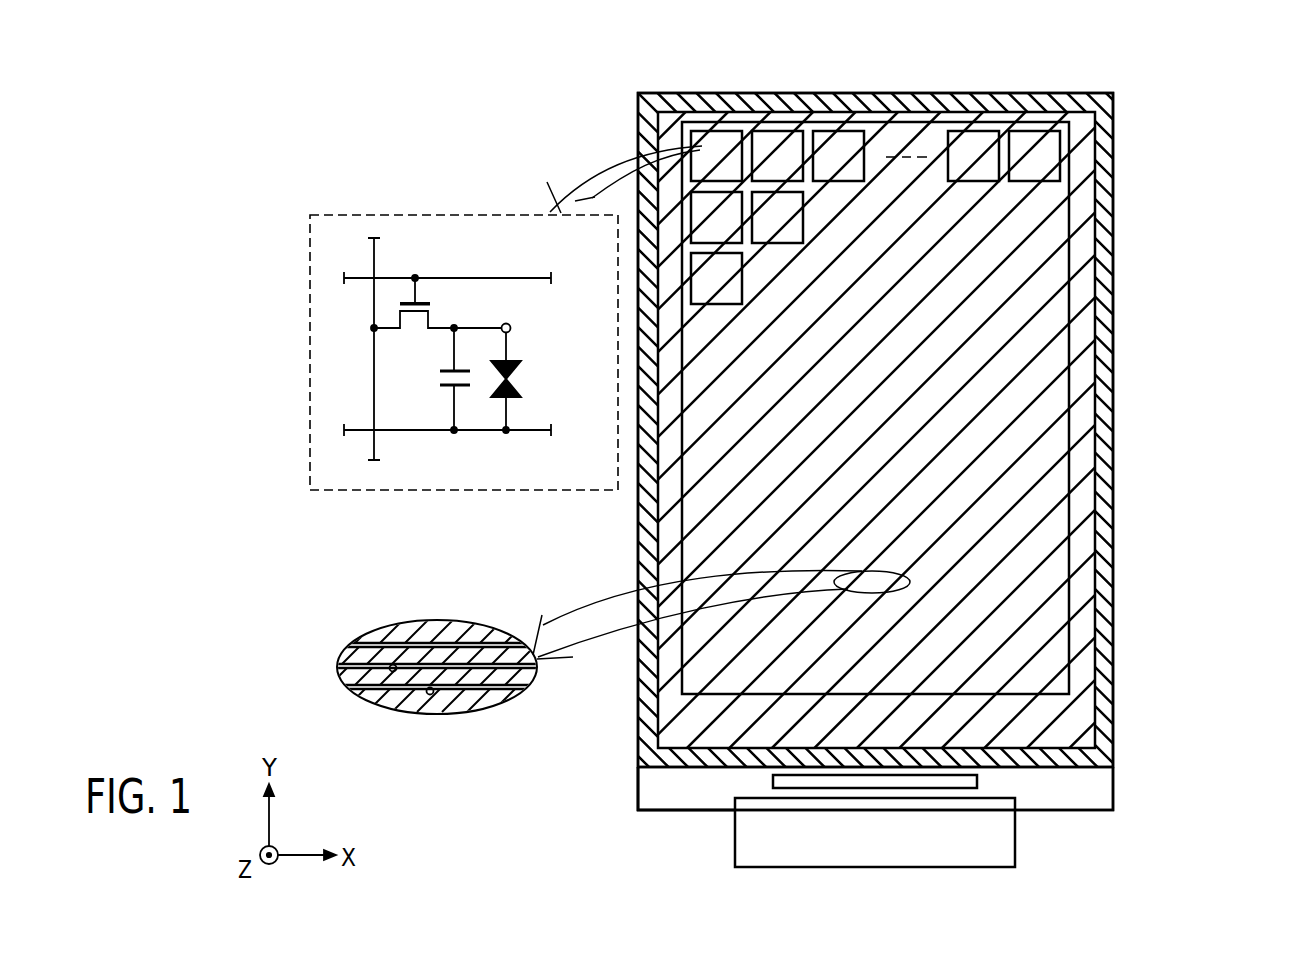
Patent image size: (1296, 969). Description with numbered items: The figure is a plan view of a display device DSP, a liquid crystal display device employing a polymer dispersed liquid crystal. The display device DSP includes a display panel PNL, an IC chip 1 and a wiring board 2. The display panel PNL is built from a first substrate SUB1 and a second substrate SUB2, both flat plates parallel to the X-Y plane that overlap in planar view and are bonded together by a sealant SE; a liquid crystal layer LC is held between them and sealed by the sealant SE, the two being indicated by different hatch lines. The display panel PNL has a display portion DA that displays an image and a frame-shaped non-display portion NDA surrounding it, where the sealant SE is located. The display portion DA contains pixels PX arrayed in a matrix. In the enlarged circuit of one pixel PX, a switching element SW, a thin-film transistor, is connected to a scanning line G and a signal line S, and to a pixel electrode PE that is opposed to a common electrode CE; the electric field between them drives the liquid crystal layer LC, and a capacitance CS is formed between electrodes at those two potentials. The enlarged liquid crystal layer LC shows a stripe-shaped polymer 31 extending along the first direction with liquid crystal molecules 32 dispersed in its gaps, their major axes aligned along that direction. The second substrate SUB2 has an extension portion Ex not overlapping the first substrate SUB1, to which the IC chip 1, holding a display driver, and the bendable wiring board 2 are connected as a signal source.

The display device DSP is at (1200, 139).
The display panel PNL is at (1118, 88).
The display portion DA is at (1080, 470).
The non-display portion NDA is at (1114, 557).
The sealant SE is at (1102, 633).
The liquid crystal layer LC is at (1082, 718).
The first substrate SUB1 is at (1102, 745).
The second substrate SUB2 is at (1102, 790).
The extension portion Ex is at (650, 788).
The pixel PX is at (832, 130).
The IC chip 1 is at (977, 782).
The wiring board 2 is at (1015, 855).
The polymer 31 is at (348, 680).
The liquid crystal molecules 32 is at (430, 695).
The scanning line G is at (358, 278).
The signal line S is at (374, 362).
The switching element SW is at (448, 315).
The capacitance CS is at (430, 381).
The pixel electrode PE is at (512, 328).
The common electrode CE is at (528, 432).